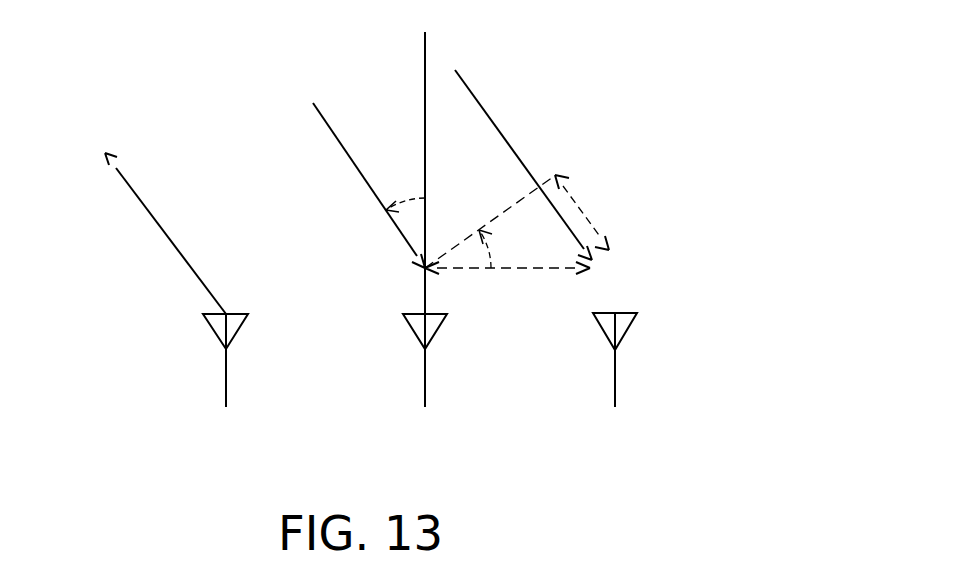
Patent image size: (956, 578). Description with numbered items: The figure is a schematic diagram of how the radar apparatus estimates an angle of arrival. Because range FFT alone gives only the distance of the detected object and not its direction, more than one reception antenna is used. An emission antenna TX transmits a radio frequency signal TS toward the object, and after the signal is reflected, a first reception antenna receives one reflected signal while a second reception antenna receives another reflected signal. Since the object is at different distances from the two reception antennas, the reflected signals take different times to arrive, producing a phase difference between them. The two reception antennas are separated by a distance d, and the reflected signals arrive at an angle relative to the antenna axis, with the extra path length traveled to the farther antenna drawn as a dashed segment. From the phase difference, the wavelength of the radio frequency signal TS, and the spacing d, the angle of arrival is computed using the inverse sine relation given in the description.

The emission antenna TX is at (225, 385).
The radio frequency signal TS is at (144, 211).
The distance between the reception antennas d is at (507, 282).